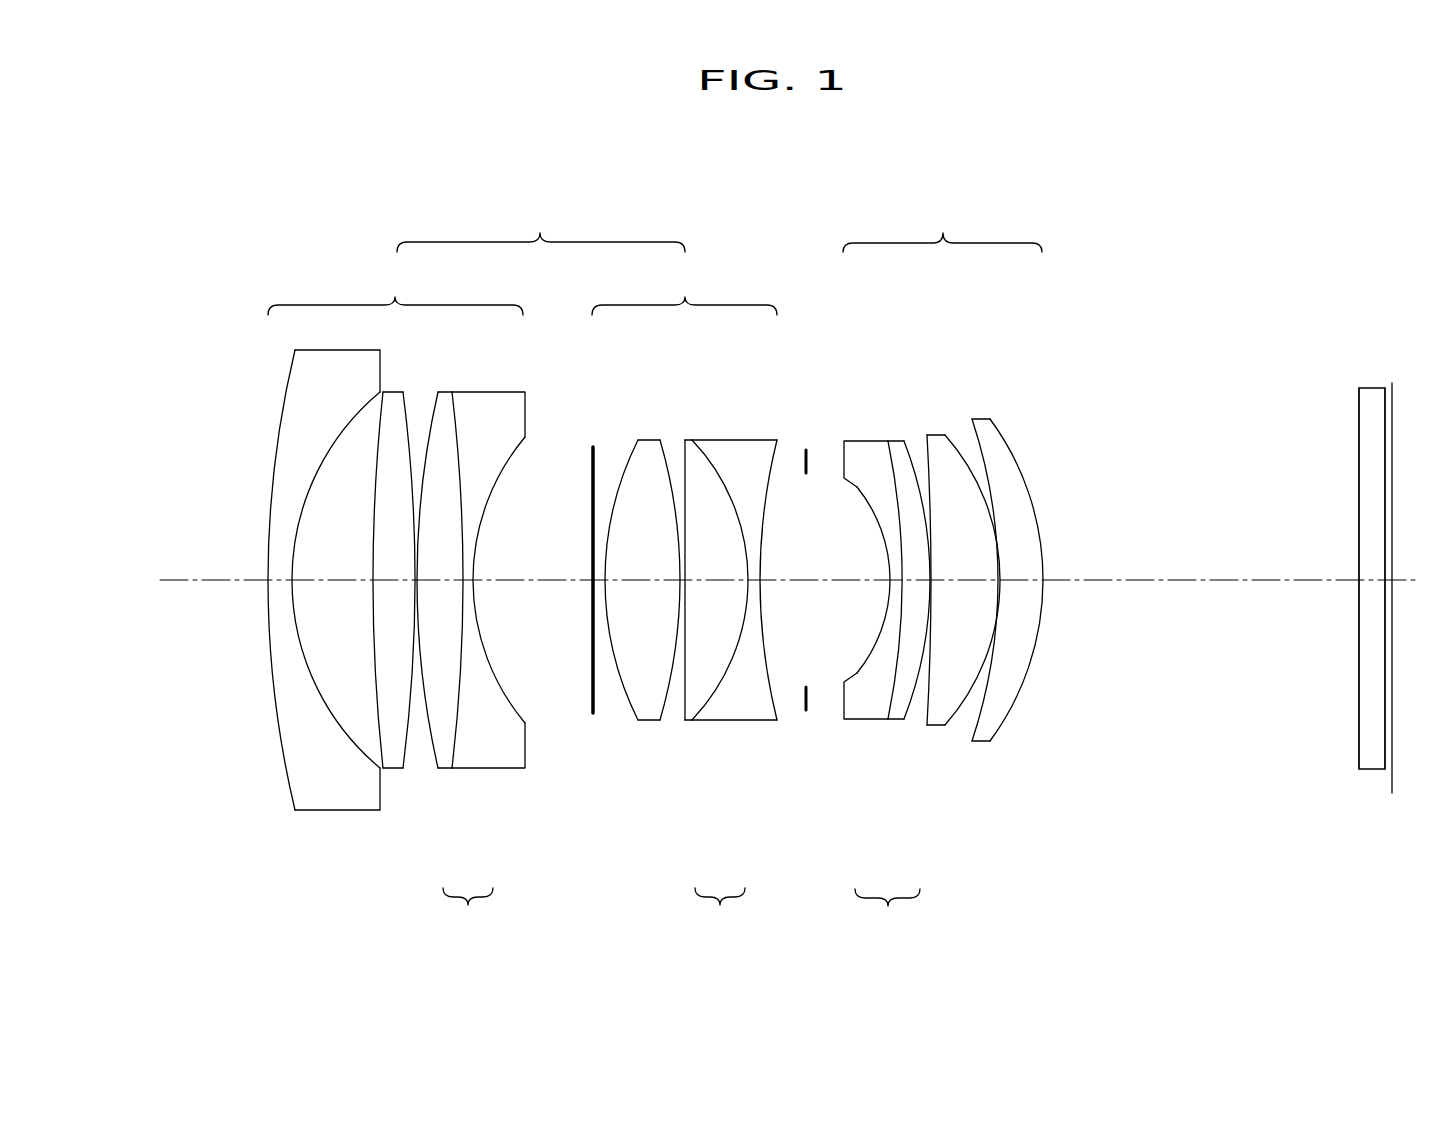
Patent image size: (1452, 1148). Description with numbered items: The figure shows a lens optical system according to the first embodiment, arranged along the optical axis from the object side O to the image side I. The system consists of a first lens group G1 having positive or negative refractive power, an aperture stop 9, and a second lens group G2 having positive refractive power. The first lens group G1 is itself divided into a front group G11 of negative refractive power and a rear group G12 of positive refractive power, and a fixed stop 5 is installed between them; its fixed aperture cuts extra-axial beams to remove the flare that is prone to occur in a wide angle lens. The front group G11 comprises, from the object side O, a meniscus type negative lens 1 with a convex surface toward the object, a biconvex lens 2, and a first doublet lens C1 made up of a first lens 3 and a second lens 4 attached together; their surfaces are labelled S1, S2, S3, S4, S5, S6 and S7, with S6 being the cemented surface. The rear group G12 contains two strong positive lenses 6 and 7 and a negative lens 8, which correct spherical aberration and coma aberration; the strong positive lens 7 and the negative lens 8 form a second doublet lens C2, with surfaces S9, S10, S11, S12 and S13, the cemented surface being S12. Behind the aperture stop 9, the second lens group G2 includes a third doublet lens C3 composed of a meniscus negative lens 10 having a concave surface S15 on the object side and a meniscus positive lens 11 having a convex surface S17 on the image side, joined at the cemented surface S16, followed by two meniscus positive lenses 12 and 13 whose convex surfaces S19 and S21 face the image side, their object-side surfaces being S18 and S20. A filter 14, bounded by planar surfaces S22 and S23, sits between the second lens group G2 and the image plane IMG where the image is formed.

The meniscus type negative lens 1 is at (286, 619).
The biconvex lens 2 is at (303, 640).
The first lens 3 is at (376, 640).
The second lens 4 is at (506, 640).
The fixed stop 5 is at (593, 713).
The strong positive lens 6 is at (639, 627).
The strong positive lens 7 is at (737, 611).
The negative lens 8 is at (771, 664).
The aperture stop 9 is at (806, 710).
The meniscus negative lens 10 is at (909, 628).
The meniscus positive lens 11 is at (1013, 657).
The meniscus positive lens 12 is at (1032, 663).
The meniscus positive lens 13 is at (1055, 655).
The filter 14 is at (1320, 640).
The image plane IMG is at (1392, 793).
The object side O is at (133, 582).
The image side I is at (1440, 582).
The first lens group G1 is at (541, 225).
The front group G11 is at (395, 287).
The rear group G12 is at (684, 287).
The second lens group G2 is at (942, 225).
The first doublet lens C1 is at (468, 914).
The second doublet lens C2 is at (720, 914).
The third doublet lens C3 is at (887, 914).
The lens surface S1 is at (275, 716).
The lens surface S2 is at (305, 660).
The lens surface S3 is at (372, 608).
The lens surface S4 is at (414, 530).
The lens surface S5 is at (425, 474).
The lens surface S6 is at (462, 527).
The lens surface S7 is at (487, 640).
The lens surface S9 is at (630, 470).
The lens surface S10 is at (669, 470).
The lens surface S11 is at (687, 487).
The lens surface S12 is at (733, 493).
The lens surface S13 is at (762, 555).
The lens surface S15 is at (862, 495).
The lens surface S16 is at (895, 495).
The lens surface S17 is at (921, 495).
The lens surface S18 is at (931, 522).
The lens surface S19 is at (968, 695).
The lens surface S20 is at (993, 653).
The lens surface S21 is at (1038, 628).
The filter surface S22 is at (1359, 430).
The filter surface S23 is at (1385, 497).